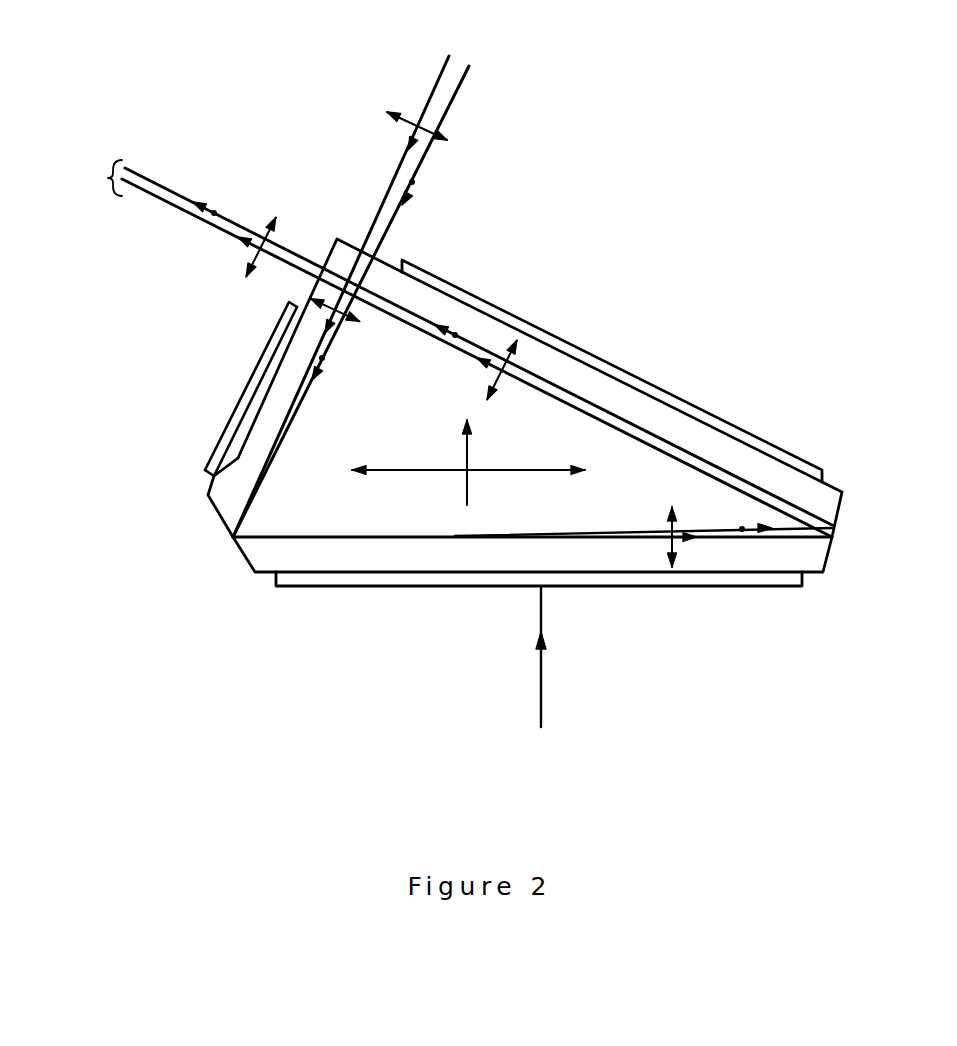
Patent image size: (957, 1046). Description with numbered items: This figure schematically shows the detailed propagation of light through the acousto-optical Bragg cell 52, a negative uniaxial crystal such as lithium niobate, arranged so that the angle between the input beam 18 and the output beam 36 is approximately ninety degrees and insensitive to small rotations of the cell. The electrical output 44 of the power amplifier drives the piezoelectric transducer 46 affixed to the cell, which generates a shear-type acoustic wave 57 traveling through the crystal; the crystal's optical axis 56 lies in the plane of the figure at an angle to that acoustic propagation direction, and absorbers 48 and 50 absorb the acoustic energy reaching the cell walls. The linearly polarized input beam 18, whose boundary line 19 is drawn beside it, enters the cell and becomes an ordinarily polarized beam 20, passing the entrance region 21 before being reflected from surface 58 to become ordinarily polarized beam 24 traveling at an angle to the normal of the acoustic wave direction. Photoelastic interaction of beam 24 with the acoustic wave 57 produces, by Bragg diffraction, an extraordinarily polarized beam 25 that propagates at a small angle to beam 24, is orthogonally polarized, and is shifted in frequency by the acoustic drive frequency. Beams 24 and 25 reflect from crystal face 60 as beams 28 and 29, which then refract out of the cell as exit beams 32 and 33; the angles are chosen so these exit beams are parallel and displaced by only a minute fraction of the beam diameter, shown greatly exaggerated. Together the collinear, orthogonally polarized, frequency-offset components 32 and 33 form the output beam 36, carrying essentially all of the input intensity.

The input beam 18 is at (452, 105).
The first surface 19 is at (437, 76).
The ordinarily polarized beam 20 is at (330, 348).
The beam splitter region 21 is at (336, 242).
The ordinarily polarized beam 24 is at (742, 532).
The extraordinarily polarized beam 25 is at (660, 545).
The beam 28 is at (463, 338).
The beam 29 is at (537, 377).
The exit beam 32 is at (204, 208).
The exit beam 33 is at (275, 250).
The output beam 36 is at (217, 222).
The electrical output 44 is at (544, 688).
The piezoelectric transducer 46 is at (306, 588).
The absorber 48 is at (660, 389).
The absorber 50 is at (265, 352).
The acousto-optical Bragg cell 52 is at (238, 406).
The optical axis 56 is at (400, 468).
The acoustic wave 57 is at (466, 505).
The surface 58 is at (214, 500).
The crystal face 60 is at (842, 500).